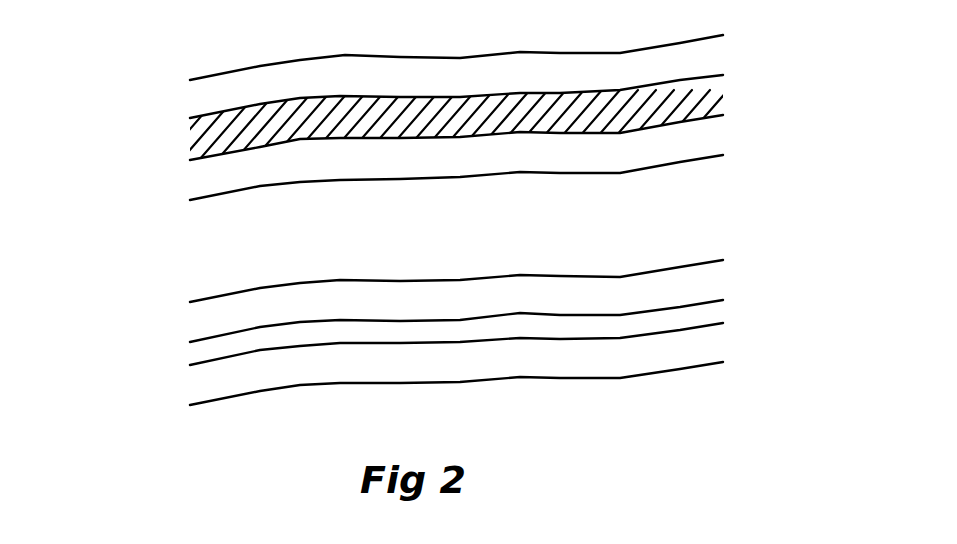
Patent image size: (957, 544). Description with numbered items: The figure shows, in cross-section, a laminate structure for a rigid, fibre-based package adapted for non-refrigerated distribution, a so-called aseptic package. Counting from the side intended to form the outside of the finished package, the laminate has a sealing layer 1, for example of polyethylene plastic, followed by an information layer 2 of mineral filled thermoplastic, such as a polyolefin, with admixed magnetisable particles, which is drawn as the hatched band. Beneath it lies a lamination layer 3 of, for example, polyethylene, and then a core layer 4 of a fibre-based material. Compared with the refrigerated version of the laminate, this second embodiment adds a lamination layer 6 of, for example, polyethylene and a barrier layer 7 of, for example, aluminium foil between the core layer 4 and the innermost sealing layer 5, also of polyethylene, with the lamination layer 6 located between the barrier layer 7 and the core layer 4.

The sealing layer 1 is at (722, 63).
The information layer 2 is at (190, 140).
The lamination layer 3 is at (737, 143).
The core layer 4 is at (190, 247).
The sealing layer 5 is at (722, 350).
The lamination layer 6 is at (722, 271).
The barrier layer 7 is at (190, 352).